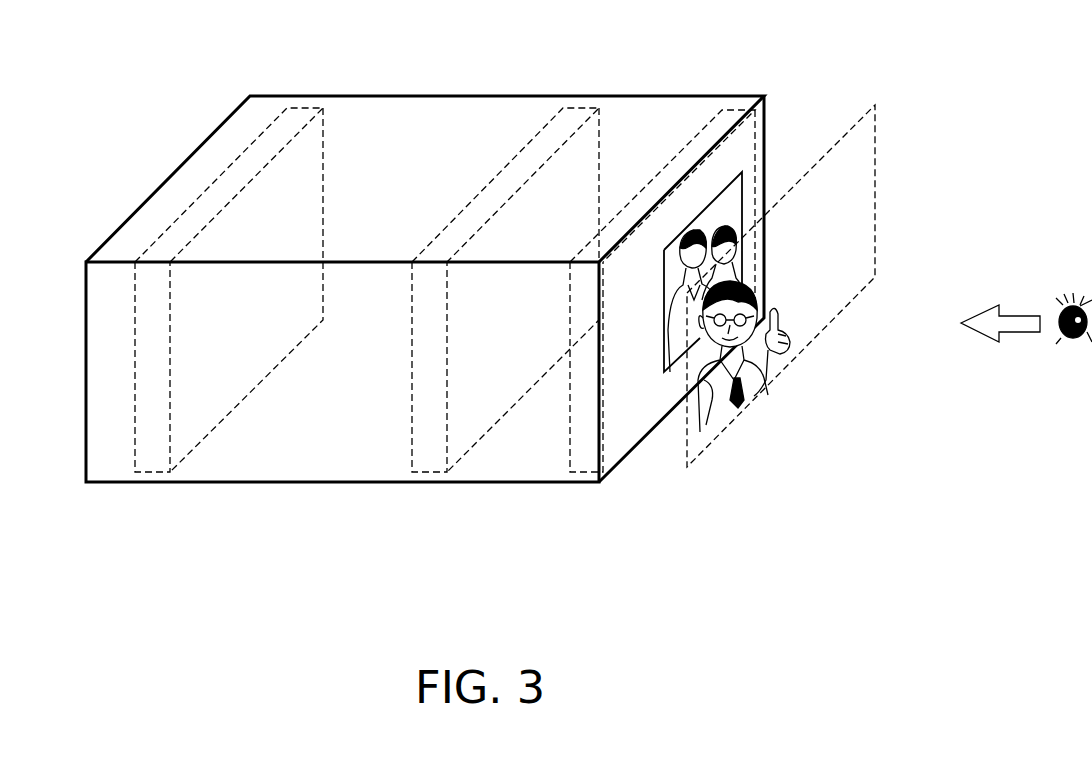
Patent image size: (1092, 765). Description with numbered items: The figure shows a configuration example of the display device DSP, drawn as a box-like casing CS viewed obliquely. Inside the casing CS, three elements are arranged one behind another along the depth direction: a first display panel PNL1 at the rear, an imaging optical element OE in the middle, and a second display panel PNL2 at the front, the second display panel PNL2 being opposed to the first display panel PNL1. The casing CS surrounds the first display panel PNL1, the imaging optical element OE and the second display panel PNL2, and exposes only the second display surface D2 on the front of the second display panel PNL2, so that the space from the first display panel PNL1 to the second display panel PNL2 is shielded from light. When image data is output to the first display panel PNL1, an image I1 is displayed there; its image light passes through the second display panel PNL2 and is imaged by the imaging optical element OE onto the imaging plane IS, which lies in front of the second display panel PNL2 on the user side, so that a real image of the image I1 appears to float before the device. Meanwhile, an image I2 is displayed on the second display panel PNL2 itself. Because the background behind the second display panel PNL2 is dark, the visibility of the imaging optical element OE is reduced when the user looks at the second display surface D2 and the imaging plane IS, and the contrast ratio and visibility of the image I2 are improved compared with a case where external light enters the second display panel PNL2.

The first display panel PNL1 is at (300, 108).
The imaging optical element OE is at (575, 108).
The second display panel PNL2 is at (736, 112).
The imaging plane IS is at (877, 108).
The image I2 is at (733, 198).
The image I1 is at (735, 410).
The second display surface D2 is at (621, 425).
The casing CS is at (102, 472).
The display device DSP is at (343, 527).